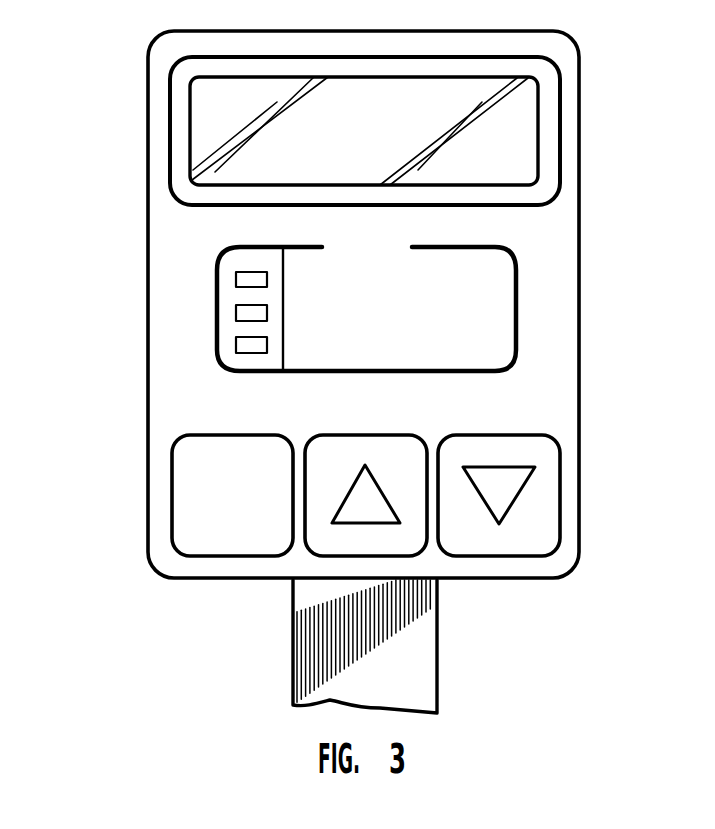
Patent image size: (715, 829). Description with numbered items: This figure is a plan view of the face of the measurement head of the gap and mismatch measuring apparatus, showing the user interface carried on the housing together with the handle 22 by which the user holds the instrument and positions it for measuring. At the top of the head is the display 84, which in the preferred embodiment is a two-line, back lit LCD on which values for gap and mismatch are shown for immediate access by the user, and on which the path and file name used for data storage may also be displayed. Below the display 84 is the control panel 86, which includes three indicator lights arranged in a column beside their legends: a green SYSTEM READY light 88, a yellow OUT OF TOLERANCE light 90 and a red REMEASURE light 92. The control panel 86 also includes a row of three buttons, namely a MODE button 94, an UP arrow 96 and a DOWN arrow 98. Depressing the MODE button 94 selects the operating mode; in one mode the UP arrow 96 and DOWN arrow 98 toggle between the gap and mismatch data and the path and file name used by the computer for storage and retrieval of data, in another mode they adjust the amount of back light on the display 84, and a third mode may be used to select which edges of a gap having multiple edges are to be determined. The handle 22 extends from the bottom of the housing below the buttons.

The handle 22 is at (422, 613).
The display 84 is at (447, 130).
The control panel 86 is at (530, 297).
The "SYSTEM READY" light 88 is at (237, 277).
The "OUT OF TOLERANCE" light 90 is at (242, 310).
The "REMEASURE" light 92 is at (240, 347).
The "MODE" button 94 is at (233, 467).
The "UP" arrow 96 is at (363, 452).
The "DOWN" arrow 98 is at (528, 453).